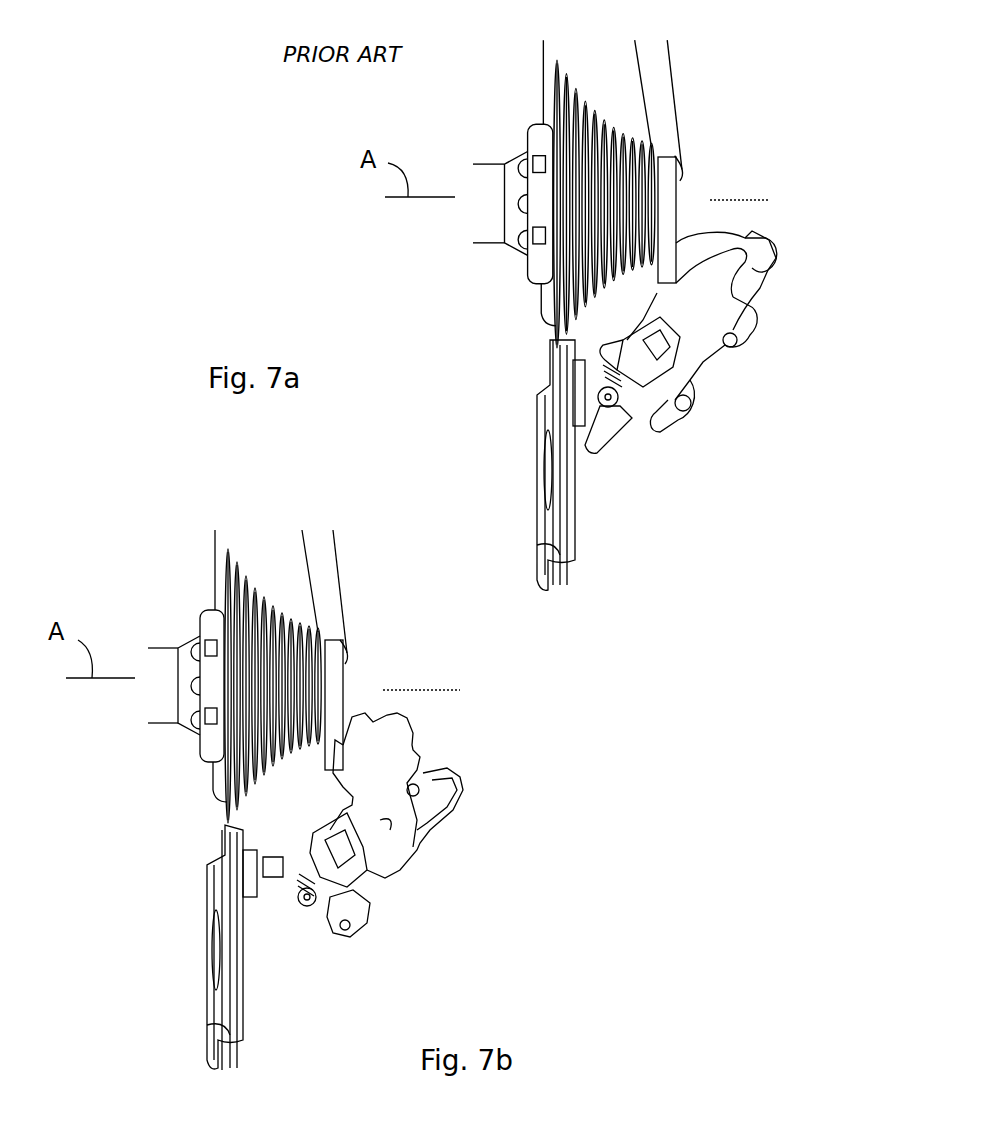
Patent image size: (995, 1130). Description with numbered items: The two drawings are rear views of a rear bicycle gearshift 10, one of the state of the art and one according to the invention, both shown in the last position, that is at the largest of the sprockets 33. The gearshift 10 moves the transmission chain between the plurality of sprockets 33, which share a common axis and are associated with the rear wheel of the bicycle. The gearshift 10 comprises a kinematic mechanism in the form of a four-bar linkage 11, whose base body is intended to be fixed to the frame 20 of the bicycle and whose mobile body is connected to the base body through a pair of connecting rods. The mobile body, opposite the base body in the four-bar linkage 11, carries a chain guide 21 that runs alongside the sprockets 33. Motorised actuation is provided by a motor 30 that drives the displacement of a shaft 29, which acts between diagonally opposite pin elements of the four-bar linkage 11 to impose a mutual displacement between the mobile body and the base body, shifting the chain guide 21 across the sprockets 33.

In FIG. 7A, the bicycle gearshift 10 is at (742, 480).
In FIG. 7B, the bicycle gearshift 10 is at (497, 788).
In FIG. 7A, the four-bar linkage 11 is at (724, 370).
In FIG. 7B, the four-bar linkage 11 is at (405, 875).
In FIG. 7A, the frame 20 is at (673, 112).
In FIG. 7B, the frame 20 is at (330, 578).
In FIG. 7A, the chain guide 21 is at (513, 440).
In FIG. 7B, the chain guide 21 is at (262, 975).
In FIG. 7A, the shaft 29 is at (613, 442).
In FIG. 7A, the motor 30 is at (765, 255).
In FIG. 7A, the sprockets 33 is at (605, 74).
In FIG. 7B, the sprockets 33 is at (272, 574).